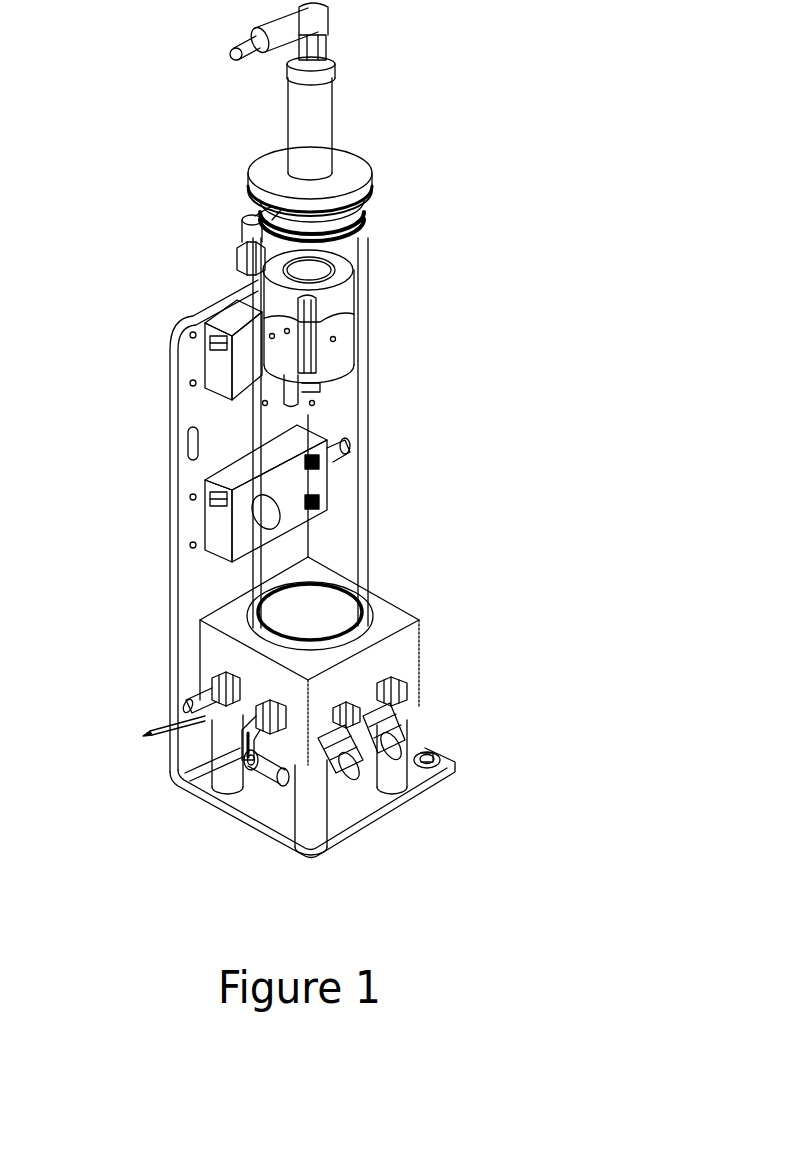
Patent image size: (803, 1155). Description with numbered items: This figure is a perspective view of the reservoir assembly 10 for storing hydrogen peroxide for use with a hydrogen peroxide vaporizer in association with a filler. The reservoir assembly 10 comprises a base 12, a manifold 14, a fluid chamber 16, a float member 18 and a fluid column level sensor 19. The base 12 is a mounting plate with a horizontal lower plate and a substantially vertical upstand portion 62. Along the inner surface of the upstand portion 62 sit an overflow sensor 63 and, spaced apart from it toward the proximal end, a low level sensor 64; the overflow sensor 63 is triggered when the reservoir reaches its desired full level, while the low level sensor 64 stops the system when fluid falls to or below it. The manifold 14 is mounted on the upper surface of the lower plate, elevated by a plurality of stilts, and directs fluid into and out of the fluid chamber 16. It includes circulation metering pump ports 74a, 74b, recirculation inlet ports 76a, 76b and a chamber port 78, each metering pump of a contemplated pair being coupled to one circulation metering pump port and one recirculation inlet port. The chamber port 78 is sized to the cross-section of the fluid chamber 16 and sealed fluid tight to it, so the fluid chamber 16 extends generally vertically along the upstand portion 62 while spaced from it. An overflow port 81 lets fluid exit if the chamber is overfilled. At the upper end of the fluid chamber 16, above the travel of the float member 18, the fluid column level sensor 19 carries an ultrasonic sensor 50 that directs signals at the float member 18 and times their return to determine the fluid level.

The reservoir assembly 10 is at (605, 296).
The base 12 is at (158, 508).
The manifold 14 is at (432, 657).
The fluid chamber 16 is at (372, 494).
The float member 18 is at (352, 320).
The fluid column level sensor 19 is at (362, 129).
The ultrasonic sensor 50 is at (340, 48).
The upstand portion 62 is at (167, 613).
The overflow sensor 63 is at (206, 361).
The low level sensor 64 is at (192, 545).
The circulation metering pump port 74a is at (210, 701).
The circulation metering pump port 74b is at (240, 743).
The recirculation inlet port 76a is at (330, 713).
The recirculation inlet port 76b is at (405, 722).
The chamber port 78 is at (374, 608).
The overflow port 81 is at (228, 248).